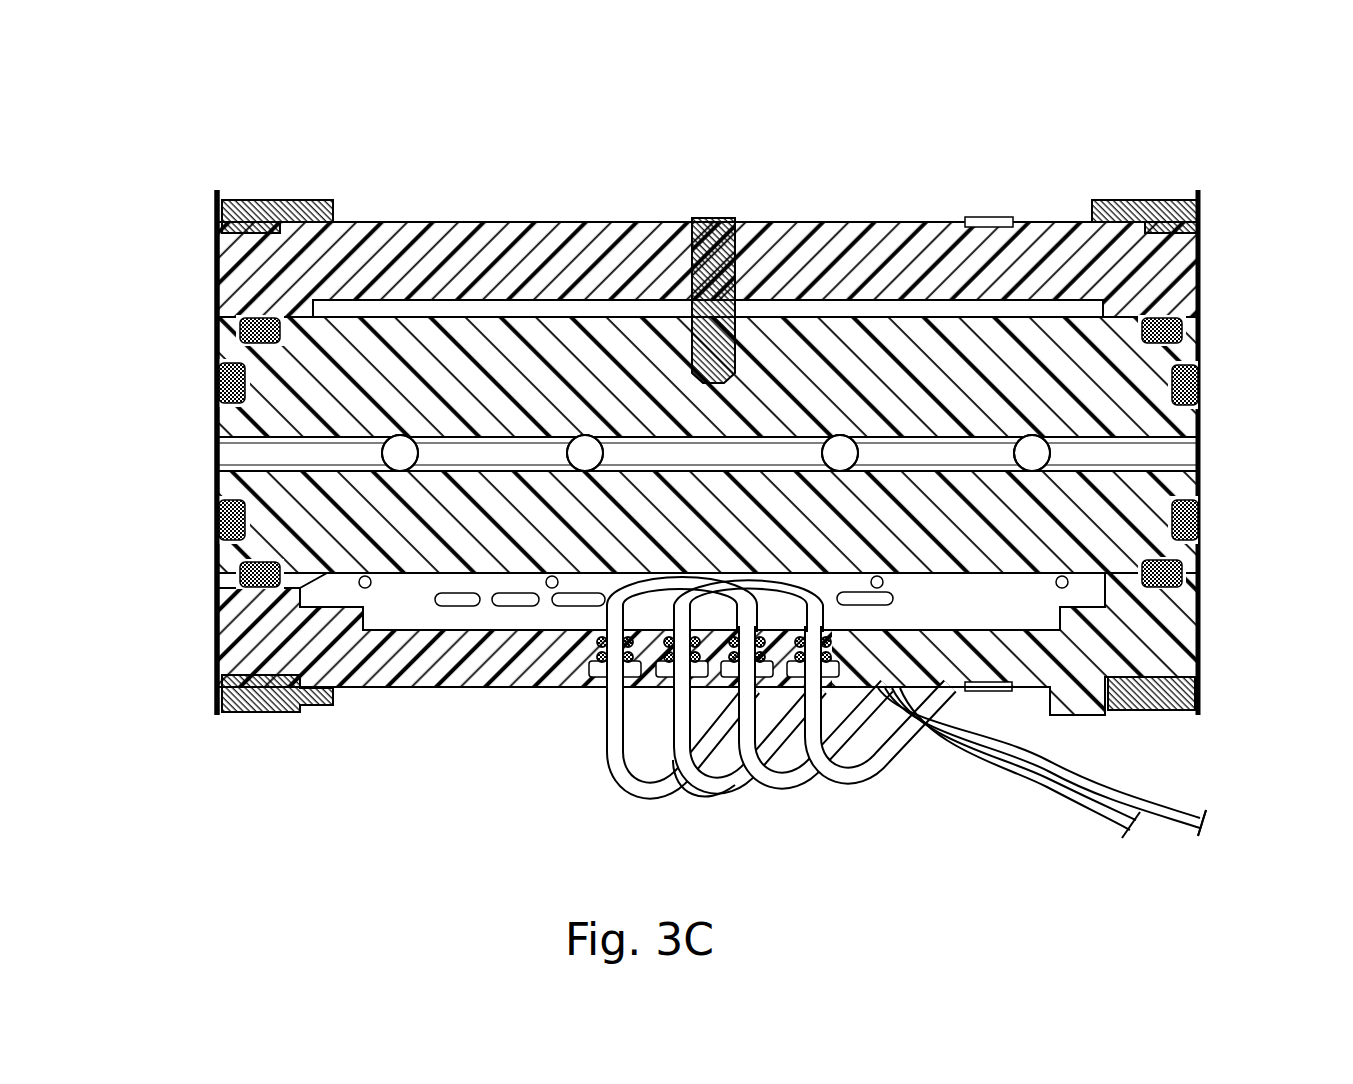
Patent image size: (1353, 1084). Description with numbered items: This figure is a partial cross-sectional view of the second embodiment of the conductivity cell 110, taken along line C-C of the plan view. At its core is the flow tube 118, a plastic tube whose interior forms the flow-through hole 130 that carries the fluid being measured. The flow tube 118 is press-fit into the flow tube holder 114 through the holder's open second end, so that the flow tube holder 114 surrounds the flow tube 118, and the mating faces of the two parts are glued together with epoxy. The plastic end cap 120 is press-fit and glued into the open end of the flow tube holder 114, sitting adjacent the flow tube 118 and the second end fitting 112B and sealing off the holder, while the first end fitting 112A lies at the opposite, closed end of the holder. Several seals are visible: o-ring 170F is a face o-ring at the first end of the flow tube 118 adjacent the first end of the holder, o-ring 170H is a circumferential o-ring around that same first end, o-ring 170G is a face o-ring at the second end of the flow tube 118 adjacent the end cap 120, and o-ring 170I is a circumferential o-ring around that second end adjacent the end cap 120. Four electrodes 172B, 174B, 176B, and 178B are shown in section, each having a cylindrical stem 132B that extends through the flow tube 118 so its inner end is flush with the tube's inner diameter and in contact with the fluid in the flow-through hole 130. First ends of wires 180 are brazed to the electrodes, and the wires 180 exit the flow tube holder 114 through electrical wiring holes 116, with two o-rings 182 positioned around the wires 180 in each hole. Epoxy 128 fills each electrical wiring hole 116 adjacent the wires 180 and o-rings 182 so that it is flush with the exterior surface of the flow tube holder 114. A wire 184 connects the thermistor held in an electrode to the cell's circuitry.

The conductivity cell 110 is at (290, 110).
The flow tube holder 114 is at (390, 268).
The flow tube 118 is at (288, 414).
The end cap 120 is at (255, 306).
The flow-through hole 130 is at (1148, 457).
The first end fitting 112A is at (1198, 210).
The second end fitting 112B is at (217, 212).
The o-ring 170I is at (235, 323).
The o-ring 170G is at (220, 380).
The o-ring 170F is at (1197, 520).
The o-ring 170H is at (1182, 584).
The electrode 172B is at (402, 436).
The electrode 176B is at (581, 436).
The electrode 178B is at (841, 436).
The electrode 174B is at (1033, 436).
The stem 132B is at (1022, 467).
The electrical wiring holes 116 is at (603, 690).
The wires 180 is at (708, 790).
The o-rings 182 is at (623, 650).
The epoxy 128 is at (885, 690).
The wire 184 is at (1137, 784).